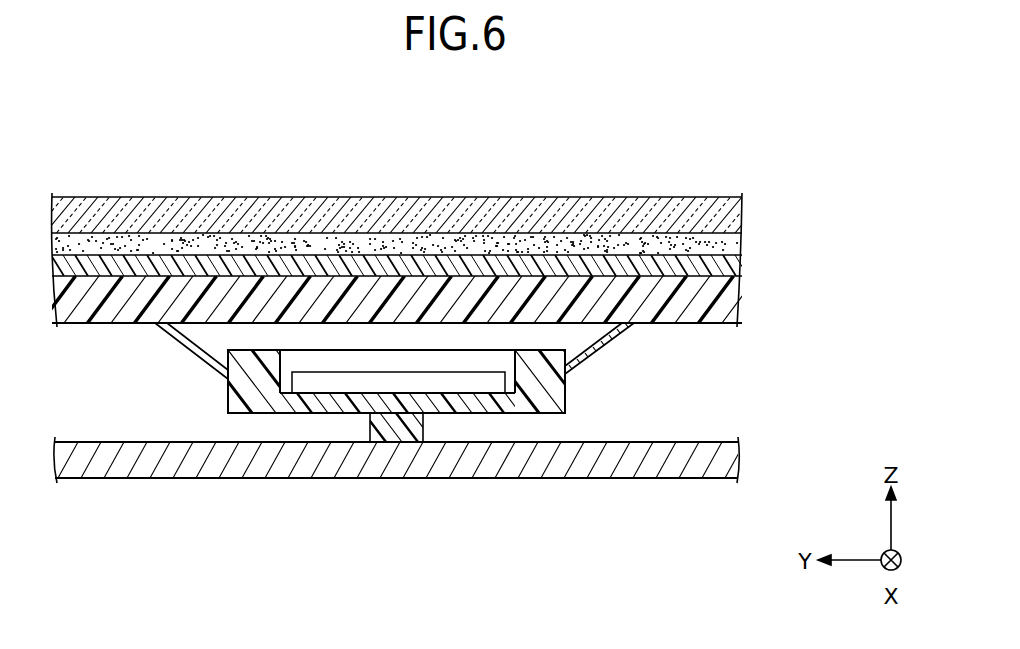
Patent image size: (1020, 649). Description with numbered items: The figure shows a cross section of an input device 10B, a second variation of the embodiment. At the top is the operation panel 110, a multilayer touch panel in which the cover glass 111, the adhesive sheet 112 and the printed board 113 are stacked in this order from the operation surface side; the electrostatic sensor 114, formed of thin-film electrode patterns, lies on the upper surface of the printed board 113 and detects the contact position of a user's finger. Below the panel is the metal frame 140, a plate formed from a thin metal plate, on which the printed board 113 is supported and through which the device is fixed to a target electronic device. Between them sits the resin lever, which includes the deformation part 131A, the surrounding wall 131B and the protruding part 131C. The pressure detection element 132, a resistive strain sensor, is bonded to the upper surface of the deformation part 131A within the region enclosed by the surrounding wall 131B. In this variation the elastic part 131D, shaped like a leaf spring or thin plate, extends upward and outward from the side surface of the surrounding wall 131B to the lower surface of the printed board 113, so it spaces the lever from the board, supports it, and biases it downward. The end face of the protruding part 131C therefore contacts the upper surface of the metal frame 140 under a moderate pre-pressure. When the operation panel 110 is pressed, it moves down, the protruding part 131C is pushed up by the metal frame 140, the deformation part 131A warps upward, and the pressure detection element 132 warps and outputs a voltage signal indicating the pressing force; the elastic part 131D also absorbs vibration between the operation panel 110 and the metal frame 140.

The input device 10B is at (710, 151).
The operation panel 110 is at (829, 197).
The cover glass 111 is at (728, 214).
The adhesive sheet 112 is at (728, 243).
The electrostatic sensor 114 is at (728, 268).
The printed board 113 is at (728, 297).
The deformation part 131A is at (312, 405).
The surrounding wall 131B is at (243, 383).
The protruding part 131C is at (385, 432).
The elastic part 131D is at (186, 338).
The pressure detection element 132 is at (457, 383).
The metal frame 140 is at (730, 458).